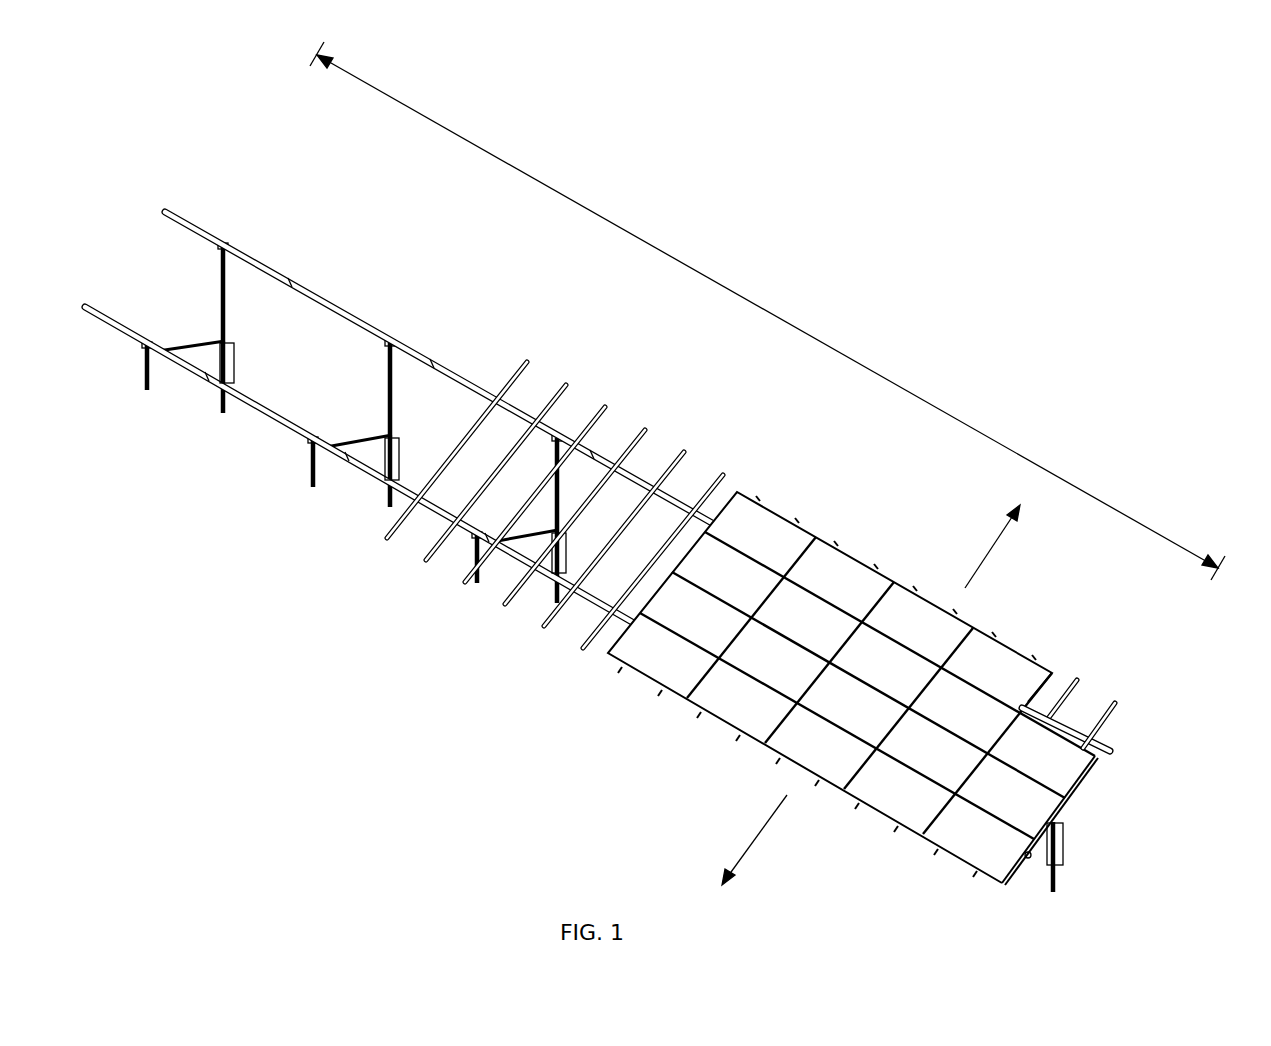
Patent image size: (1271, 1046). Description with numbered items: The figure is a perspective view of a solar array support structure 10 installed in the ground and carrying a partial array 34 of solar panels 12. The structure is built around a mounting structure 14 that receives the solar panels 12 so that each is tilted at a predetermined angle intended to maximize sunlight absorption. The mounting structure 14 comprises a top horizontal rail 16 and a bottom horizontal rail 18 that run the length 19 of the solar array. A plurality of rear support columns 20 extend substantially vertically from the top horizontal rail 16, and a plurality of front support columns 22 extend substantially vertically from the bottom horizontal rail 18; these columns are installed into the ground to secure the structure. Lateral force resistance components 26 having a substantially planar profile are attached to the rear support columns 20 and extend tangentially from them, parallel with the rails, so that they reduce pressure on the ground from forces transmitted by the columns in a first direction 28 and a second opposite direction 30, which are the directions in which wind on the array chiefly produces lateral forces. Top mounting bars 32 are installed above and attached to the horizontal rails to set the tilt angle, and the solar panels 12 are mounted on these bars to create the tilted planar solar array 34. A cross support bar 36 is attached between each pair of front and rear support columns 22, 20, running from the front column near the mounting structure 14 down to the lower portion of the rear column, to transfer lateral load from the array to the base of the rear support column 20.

The solar array support structure 10 is at (652, 393).
The solar panel 12 is at (1035, 767).
The mounting structure 14 is at (398, 402).
The top horizontal rail 16 is at (322, 300).
The bottom horizontal rail 18 is at (242, 405).
The length 19 is at (655, 246).
The rear support column 20 is at (397, 393).
The front support column 22 is at (308, 470).
The lateral force resistance component 26 is at (235, 355).
The first direction 28 is at (990, 552).
The second opposite direction 30 is at (756, 837).
The top mounting bar 32 is at (548, 393).
The solar array 34 is at (788, 635).
The cross support bar 36 is at (348, 438).